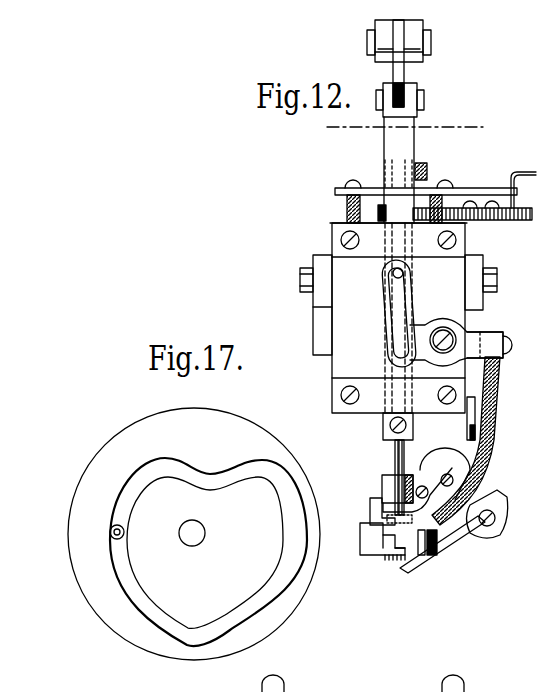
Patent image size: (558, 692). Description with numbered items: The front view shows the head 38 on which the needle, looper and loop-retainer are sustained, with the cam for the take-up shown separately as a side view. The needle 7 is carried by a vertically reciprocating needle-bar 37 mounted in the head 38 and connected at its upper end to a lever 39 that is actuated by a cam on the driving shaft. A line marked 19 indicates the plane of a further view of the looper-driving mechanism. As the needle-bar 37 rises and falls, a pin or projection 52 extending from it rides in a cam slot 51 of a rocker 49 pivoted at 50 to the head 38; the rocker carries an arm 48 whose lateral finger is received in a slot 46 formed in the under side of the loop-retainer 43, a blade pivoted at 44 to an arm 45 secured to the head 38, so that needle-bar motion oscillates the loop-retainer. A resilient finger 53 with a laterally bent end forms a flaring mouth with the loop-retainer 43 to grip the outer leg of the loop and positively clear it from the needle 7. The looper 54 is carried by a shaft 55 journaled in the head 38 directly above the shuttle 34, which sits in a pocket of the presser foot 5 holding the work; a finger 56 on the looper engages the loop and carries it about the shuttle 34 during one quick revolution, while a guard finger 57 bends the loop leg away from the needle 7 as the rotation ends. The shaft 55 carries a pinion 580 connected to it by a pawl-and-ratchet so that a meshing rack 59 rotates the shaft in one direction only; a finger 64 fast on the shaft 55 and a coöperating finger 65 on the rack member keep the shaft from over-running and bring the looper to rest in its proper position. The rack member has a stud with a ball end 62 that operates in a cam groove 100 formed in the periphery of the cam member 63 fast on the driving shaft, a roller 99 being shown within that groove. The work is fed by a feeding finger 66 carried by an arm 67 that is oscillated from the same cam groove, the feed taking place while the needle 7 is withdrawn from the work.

In FIG. 12, the lever 39 is at (418, 26).
In FIG. 12, the section line 19 is at (406, 128).
In FIG. 12, the finger 64 is at (424, 170).
In FIG. 12, the rack 59 is at (472, 204).
In FIG. 12, the coöperating finger 65 is at (522, 172).
In FIG. 12, the pinion 580 is at (378, 213).
In FIG. 12, the head 38 is at (352, 345).
In FIG. 12, the cam slot 51 is at (398, 318).
In FIG. 12, the pin or projection 52 is at (393, 273).
In FIG. 12, the pivot 50 is at (446, 338).
In FIG. 12, the rocker 49 is at (470, 334).
In FIG. 12, the arm 45 is at (484, 442).
In FIG. 12, the arm 48 is at (474, 462).
In FIG. 12, the needle-bar 37 is at (382, 425).
In FIG. 12, the shaft 55 is at (394, 446).
In FIG. 12, the needle 7 is at (394, 461).
In FIG. 12, the resilient finger 53 is at (382, 485).
In FIG. 12, the looper 54 is at (372, 503).
In FIG. 12, the shuttle 34 is at (386, 519).
In FIG. 12, the finger 56 is at (376, 530).
In FIG. 12, the pivot 44 is at (462, 478).
In FIG. 12, the slot 46 is at (448, 535).
In FIG. 12, the guard finger 57 is at (420, 556).
In FIG. 12, the feeding finger 66 is at (432, 556).
In FIG. 12, the loop-retainer 43 is at (410, 530).
In FIG. 12, the presser foot 5 is at (415, 553).
In FIG. 12, the arm 67 is at (505, 530).
In FIG. 12, the ball end 62 is at (284, 682).
In FIG. 17, the cam member 63 is at (108, 437).
In FIG. 17, the cam groove 100 is at (165, 615).
In FIG. 17, the roller 99 is at (112, 537).